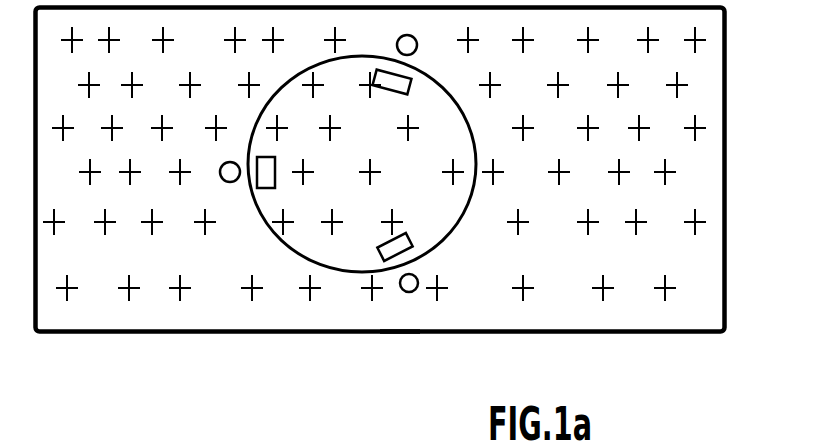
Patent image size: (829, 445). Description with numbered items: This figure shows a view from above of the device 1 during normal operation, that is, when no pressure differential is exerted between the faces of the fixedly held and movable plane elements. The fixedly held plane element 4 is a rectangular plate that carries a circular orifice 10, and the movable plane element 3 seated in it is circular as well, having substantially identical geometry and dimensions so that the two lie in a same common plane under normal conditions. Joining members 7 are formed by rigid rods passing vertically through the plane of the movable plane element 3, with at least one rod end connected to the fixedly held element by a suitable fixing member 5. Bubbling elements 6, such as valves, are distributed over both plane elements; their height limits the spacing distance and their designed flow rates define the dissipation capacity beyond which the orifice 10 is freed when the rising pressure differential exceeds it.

The device 1 is at (727, 197).
The movable plane element 3 is at (307, 238).
The fixedly held plane element 4 is at (400, 334).
The fixing member 5 is at (411, 292).
The bubbling element 6 is at (610, 298).
The joining member 7 is at (381, 253).
The orifice 10 is at (268, 232).